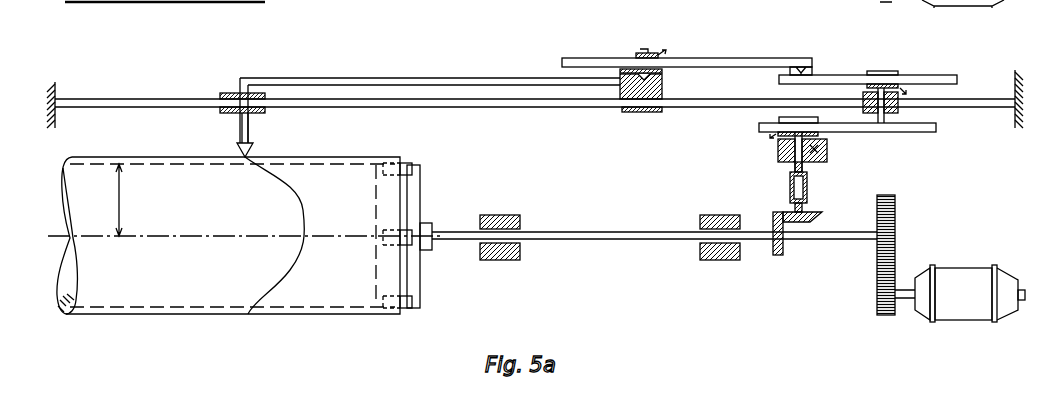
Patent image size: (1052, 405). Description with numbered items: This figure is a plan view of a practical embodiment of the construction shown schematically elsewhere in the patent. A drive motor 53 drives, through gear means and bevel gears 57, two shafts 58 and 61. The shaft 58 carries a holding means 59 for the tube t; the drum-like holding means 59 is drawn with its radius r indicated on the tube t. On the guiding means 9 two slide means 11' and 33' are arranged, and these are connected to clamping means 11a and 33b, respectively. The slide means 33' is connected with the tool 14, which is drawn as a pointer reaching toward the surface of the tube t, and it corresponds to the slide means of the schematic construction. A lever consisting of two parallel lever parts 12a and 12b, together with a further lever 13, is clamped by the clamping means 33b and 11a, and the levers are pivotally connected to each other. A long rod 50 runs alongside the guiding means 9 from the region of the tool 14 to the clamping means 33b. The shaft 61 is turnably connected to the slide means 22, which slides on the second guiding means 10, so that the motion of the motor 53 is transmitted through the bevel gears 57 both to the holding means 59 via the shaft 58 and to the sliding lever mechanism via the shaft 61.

The guiding means 9 is at (983, 100).
The guiding means 10 is at (822, 152).
The clamping means 11a is at (897, 72).
The slide means 11' is at (917, 108).
The lever part 12a is at (833, 78).
The lever part 12b is at (882, 128).
The lever 13 is at (727, 65).
The tool 14 is at (235, 145).
The slide means 22 is at (816, 158).
The clamping means 33b is at (660, 75).
The slide means 33' is at (659, 119).
The rod 50 is at (363, 80).
The drive motor 53 is at (966, 287).
The bevel gears 57 is at (776, 258).
The shaft 58 is at (600, 236).
The holding means 59 is at (408, 281).
The shaft 61 is at (790, 186).
The drum radius r is at (116, 200).
The tube t is at (340, 314).